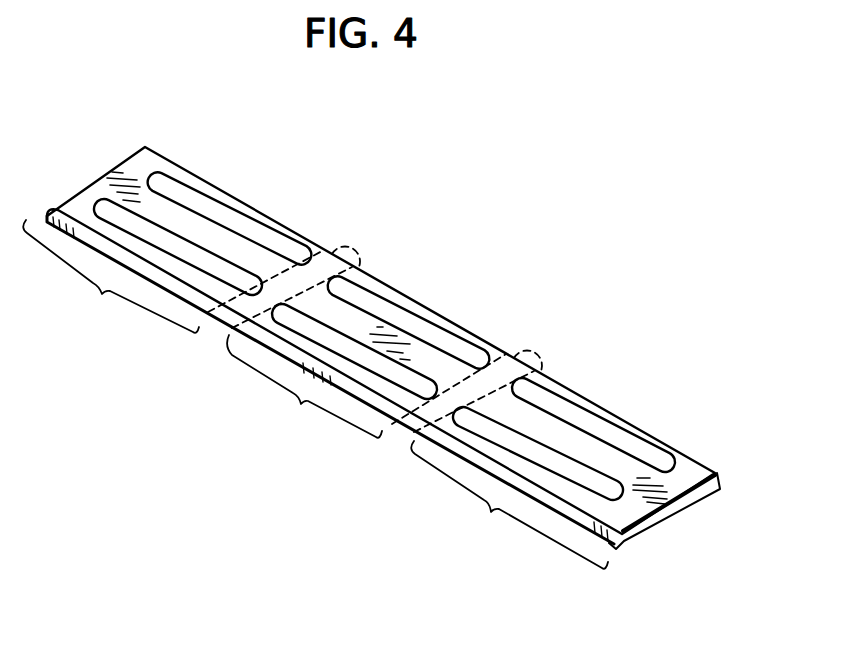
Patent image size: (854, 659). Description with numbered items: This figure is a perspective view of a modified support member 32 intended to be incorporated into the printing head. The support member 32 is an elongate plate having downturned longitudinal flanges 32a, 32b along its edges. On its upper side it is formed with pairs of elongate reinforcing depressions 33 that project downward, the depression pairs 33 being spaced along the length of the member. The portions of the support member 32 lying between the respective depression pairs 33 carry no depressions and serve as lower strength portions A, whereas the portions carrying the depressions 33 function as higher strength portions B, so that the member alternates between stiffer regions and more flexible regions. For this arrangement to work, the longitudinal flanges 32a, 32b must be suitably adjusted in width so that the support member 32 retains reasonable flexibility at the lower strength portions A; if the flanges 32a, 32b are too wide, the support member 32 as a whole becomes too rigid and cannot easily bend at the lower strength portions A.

The support member 32 is at (147, 148).
The elongate reinforcing depressions 33 is at (110, 207).
The longitudinal flange 32a is at (592, 543).
The longitudinal flange 32b is at (704, 492).
The lower strength portions A is at (347, 244).
The higher strength portions B is at (315, 394).